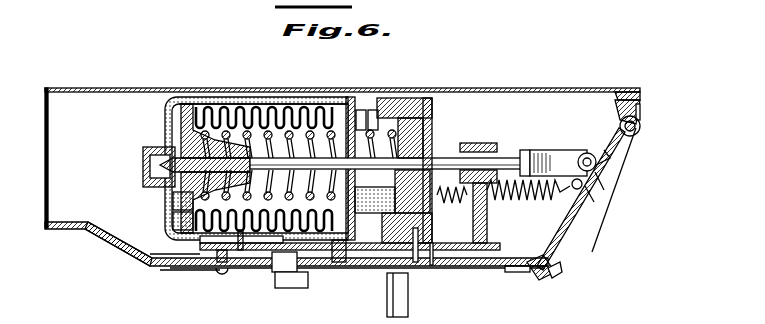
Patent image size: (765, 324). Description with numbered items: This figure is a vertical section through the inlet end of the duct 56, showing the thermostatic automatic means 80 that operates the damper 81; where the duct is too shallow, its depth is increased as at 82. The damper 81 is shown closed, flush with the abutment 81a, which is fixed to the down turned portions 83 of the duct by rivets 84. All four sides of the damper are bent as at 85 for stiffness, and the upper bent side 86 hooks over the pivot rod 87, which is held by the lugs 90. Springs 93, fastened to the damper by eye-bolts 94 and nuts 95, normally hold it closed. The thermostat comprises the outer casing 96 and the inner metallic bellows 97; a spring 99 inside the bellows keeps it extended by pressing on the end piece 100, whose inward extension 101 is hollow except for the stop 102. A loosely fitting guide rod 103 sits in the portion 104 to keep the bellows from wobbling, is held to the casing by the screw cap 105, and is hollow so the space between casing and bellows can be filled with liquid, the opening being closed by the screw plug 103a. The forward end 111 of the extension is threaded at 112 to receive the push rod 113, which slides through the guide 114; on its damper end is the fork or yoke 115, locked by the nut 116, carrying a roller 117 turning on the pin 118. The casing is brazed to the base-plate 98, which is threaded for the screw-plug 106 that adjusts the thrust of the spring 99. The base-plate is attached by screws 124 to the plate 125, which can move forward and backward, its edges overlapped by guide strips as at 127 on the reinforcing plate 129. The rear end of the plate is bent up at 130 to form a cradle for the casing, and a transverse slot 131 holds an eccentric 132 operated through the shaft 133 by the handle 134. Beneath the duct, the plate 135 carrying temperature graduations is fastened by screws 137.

The duct 56 is at (524, 88).
The automatic means 80 is at (422, 100).
The damper 81 is at (574, 240).
The abutment 81a is at (535, 275).
The increased depth portion 82 is at (637, 103).
The down turned portions 83 is at (634, 92).
The rivets 84 is at (640, 112).
The bent sides 85 is at (553, 270).
The upper bent side 86 is at (636, 134).
The pivot rod 87 is at (610, 157).
The lugs 90 is at (636, 124).
The springs 93 is at (484, 206).
The eye-bolts 94 is at (562, 198).
The nuts 95 is at (600, 216).
The outer casing 96 is at (320, 100).
The inner metallic bellows 97 is at (213, 107).
The base-plate 98 is at (394, 105).
The spring 99 is at (372, 112).
The end piece 100 is at (172, 110).
The inward extension 101 is at (250, 142).
The stop 102 is at (262, 150).
The guide rod 103 is at (190, 150).
The screw plug 103a is at (150, 162).
The portion 104 is at (185, 190).
The screw cap 105 is at (145, 172).
The screw-plug 106 is at (424, 125).
The forward end 111 is at (185, 200).
The threads 112 is at (185, 213).
The push rod 113 is at (447, 158).
The guide 114 is at (488, 144).
The fork or yoke 115 is at (562, 155).
The nut 116 is at (527, 150).
The roller 117 is at (600, 172).
The pin 118 is at (592, 185).
The screws 124 is at (415, 263).
The plate 125 is at (433, 252).
The overlap 127 is at (200, 240).
The reinforcing plate 129 is at (175, 270).
The up-turned portion 130 is at (238, 252).
The transverse slot 131 is at (264, 258).
The eccentric 132 is at (340, 262).
The shaft 133 is at (285, 288).
The handle 134 is at (388, 298).
The plate 135 is at (160, 264).
The screws 137 is at (222, 274).